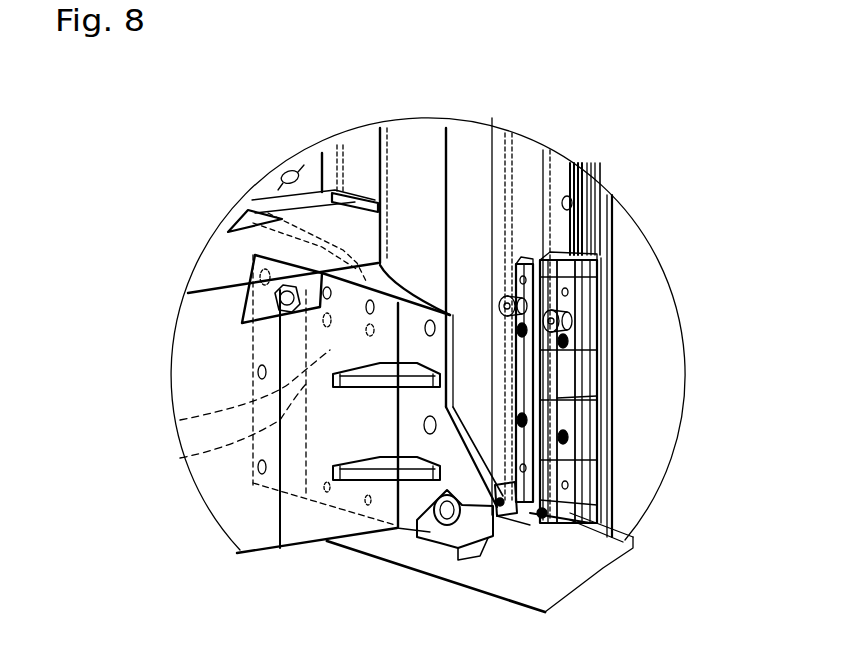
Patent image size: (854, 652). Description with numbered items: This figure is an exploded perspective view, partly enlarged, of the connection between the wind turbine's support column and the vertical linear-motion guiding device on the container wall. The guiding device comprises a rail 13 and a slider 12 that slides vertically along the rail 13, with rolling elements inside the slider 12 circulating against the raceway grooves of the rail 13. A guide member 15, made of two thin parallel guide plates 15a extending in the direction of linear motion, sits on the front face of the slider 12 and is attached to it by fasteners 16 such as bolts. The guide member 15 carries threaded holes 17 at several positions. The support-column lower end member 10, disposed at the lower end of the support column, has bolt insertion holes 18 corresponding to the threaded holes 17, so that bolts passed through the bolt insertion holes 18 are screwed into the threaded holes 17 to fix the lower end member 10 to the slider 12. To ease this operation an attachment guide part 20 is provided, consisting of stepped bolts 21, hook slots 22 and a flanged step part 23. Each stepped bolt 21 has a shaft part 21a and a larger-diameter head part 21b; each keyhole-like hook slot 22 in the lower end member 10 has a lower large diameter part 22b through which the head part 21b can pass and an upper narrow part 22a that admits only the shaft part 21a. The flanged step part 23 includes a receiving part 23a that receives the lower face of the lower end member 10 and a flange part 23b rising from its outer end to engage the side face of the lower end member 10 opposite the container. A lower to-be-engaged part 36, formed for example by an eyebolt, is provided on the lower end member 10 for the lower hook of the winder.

The support-column lower end member 10 is at (390, 425).
The slider 12 is at (598, 252).
The rail 13 is at (552, 152).
The guide member 15 is at (560, 305).
The guide plate 15a is at (565, 398).
The fastener 16 is at (570, 340).
The threaded hole 17 is at (545, 310).
The bolt insertion hole 18 is at (360, 280).
The attachment guide part 20 is at (285, 320).
The stepped bolt 21 is at (533, 318).
The shaft part 21a is at (508, 297).
The head part 21b is at (507, 297).
The hook slot 22 is at (65, 403).
The narrow part 22a is at (180, 420).
The large diameter part 22b is at (180, 458).
The flanged step part 23 is at (600, 552).
The receiving part 23a is at (520, 515).
The flange part 23b is at (520, 540).
The lower to-be-engaged part 36 is at (482, 512).